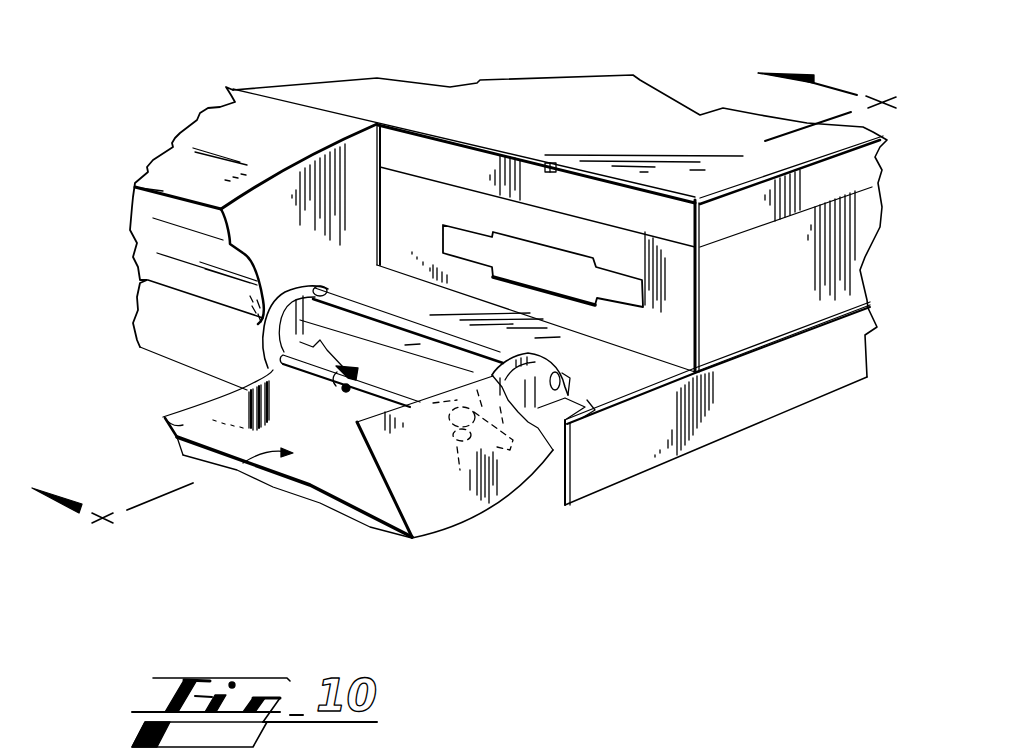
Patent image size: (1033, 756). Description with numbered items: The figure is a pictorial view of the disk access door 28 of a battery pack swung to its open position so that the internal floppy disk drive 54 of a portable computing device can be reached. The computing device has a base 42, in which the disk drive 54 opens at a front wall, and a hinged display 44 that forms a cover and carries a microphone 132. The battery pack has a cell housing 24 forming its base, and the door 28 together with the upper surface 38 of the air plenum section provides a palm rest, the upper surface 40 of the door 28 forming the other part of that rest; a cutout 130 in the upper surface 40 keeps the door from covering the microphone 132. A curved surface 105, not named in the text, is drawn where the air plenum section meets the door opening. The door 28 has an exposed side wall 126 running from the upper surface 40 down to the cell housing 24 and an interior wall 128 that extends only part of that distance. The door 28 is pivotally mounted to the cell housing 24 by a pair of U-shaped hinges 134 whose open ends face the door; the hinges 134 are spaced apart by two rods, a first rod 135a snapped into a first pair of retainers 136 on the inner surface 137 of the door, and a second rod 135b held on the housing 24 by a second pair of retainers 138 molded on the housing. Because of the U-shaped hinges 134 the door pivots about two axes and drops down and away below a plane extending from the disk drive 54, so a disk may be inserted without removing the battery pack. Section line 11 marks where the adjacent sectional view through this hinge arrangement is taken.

The section line 11 is at (477, 306).
The cell housing 24 is at (150, 328).
The disk access door 28 is at (506, 505).
The upper surface of the air plenum section 38 is at (213, 123).
The upper surface of the disk access door 40 is at (350, 514).
The base 42 is at (733, 317).
The hinged display 44 is at (604, 208).
The internal floppy disk drive 54 is at (567, 287).
The curved housing surface 105 is at (356, 166).
The exposed side wall 126 is at (428, 503).
The interior wall 128 is at (163, 418).
The cutout 130 is at (297, 494).
The microphone 132 is at (551, 162).
The U-shaped hinges 134 is at (266, 333).
The first rod 135a is at (355, 398).
The second rod 135b is at (383, 319).
The first pair of retainers 136 is at (347, 392).
The inner surface of the disk access door 137 is at (253, 458).
The second pair of retainers 138 is at (318, 313).